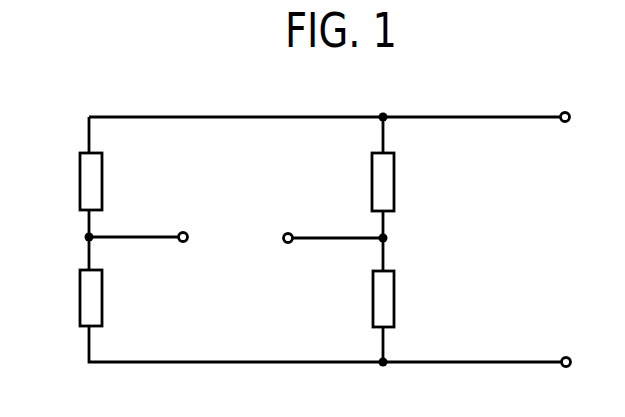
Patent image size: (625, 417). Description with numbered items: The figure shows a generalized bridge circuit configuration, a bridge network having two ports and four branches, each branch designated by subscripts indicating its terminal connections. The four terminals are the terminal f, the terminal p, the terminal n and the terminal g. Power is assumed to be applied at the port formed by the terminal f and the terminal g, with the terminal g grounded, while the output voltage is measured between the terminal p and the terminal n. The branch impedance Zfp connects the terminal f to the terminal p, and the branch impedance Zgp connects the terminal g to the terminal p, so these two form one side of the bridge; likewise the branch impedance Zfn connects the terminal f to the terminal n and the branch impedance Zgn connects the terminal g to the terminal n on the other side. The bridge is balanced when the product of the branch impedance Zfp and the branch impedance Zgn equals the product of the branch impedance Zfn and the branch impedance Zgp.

The branch impedance Zfp is at (62, 181).
The branch impedance Zgp is at (61, 298).
The branch impedance Zfn is at (412, 182).
The branch impedance Zgn is at (419, 299).
The terminal f is at (577, 115).
The terminal p is at (197, 234).
The terminal n is at (275, 235).
The terminal g is at (581, 360).